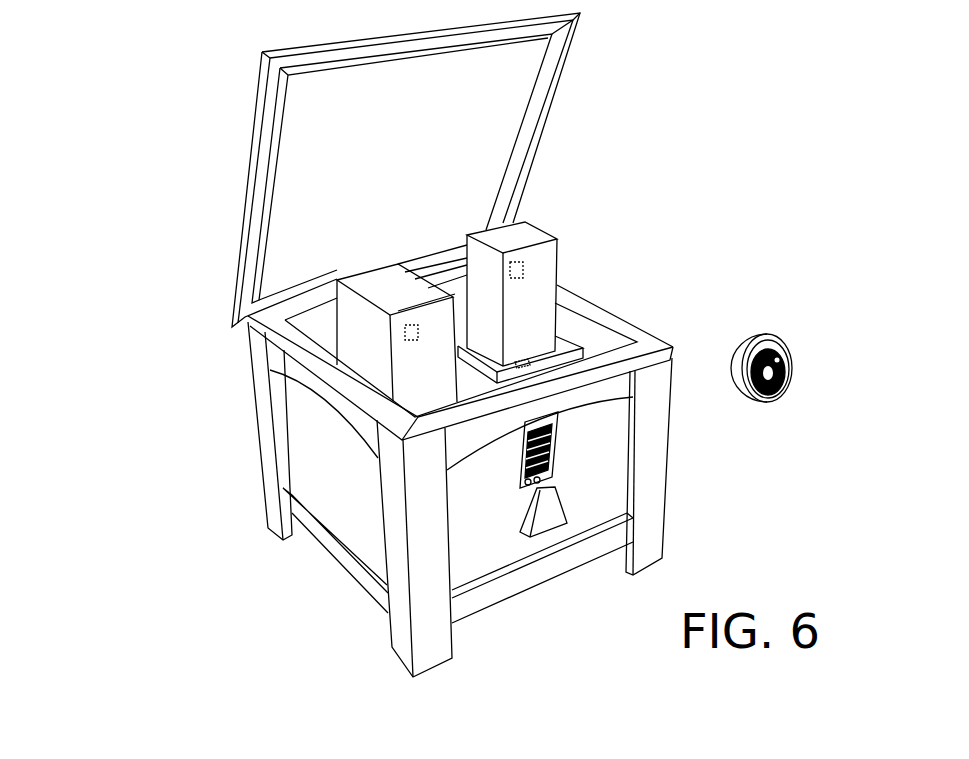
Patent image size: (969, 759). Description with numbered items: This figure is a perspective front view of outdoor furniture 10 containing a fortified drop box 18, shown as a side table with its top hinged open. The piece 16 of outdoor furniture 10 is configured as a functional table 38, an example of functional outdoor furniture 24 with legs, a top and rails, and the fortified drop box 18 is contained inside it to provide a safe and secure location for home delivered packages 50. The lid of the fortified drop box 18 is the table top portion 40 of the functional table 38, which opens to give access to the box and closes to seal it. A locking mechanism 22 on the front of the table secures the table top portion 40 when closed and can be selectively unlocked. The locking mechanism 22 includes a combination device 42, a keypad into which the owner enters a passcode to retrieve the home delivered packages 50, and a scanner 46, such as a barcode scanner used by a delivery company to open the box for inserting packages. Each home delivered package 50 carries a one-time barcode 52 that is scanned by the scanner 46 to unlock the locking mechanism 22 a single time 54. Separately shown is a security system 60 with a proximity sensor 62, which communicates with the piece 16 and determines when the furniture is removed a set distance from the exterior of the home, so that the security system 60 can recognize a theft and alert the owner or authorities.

The outdoor furniture 10 is at (198, 68).
The piece of outdoor furniture 16 is at (130, 276).
The fortified drop box 18 is at (568, 163).
The locking mechanism 22 is at (500, 463).
The functional outdoor furniture 24 is at (628, 160).
The functional table 38 is at (615, 316).
The table top portion 40 is at (248, 143).
The combination device 42 is at (548, 443).
The scanner 46 is at (553, 507).
The home delivered packages 50 is at (363, 328).
The one-time barcode 52 is at (412, 340).
The single time 54 is at (210, 500).
The security system 60 is at (748, 287).
The proximity sensor 62 is at (767, 333).